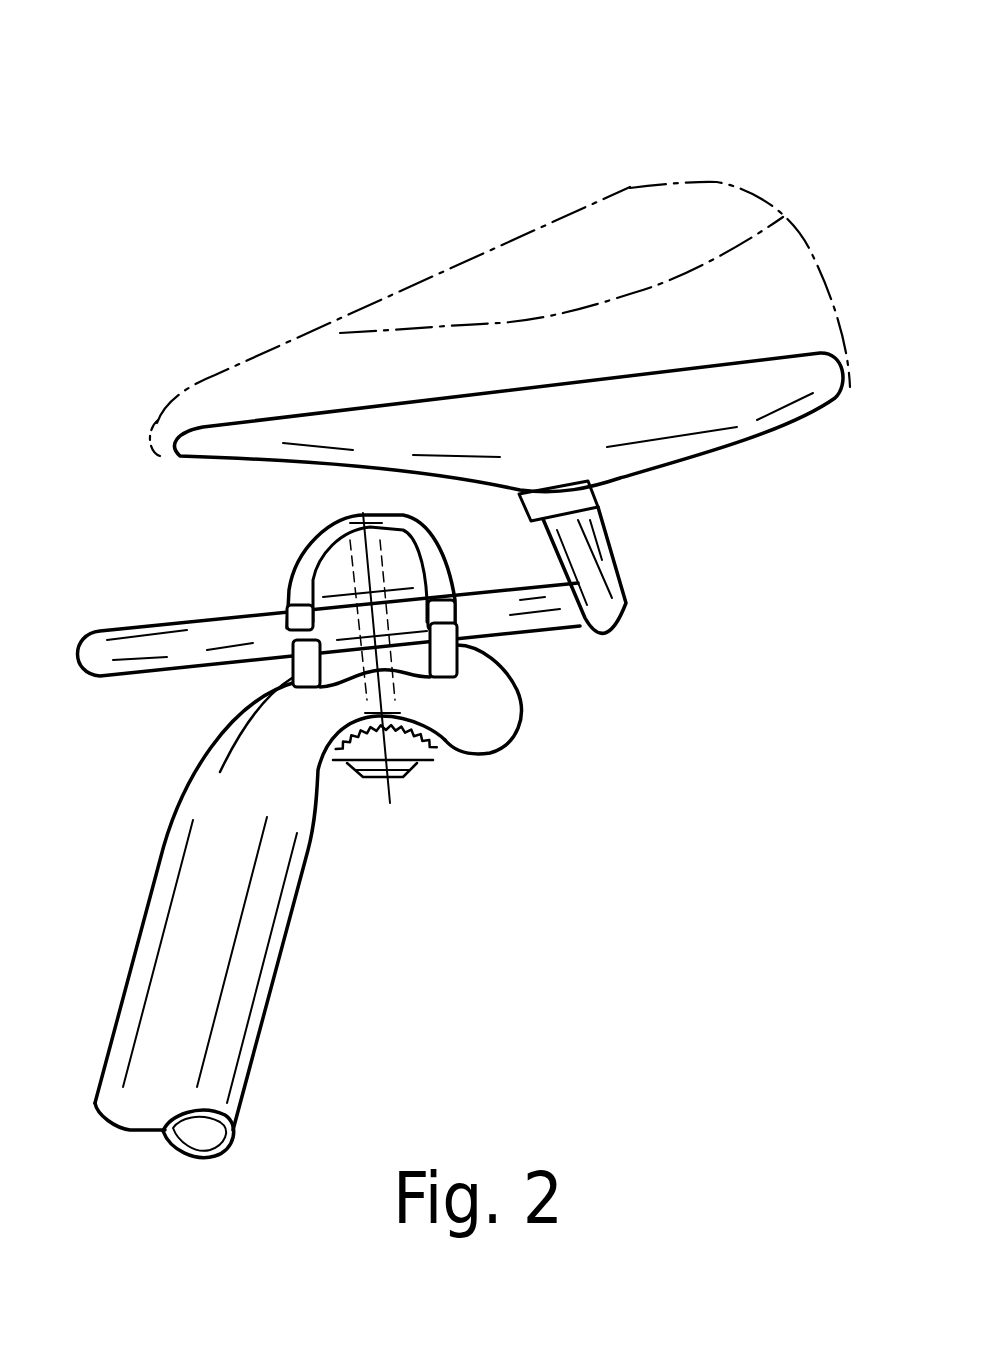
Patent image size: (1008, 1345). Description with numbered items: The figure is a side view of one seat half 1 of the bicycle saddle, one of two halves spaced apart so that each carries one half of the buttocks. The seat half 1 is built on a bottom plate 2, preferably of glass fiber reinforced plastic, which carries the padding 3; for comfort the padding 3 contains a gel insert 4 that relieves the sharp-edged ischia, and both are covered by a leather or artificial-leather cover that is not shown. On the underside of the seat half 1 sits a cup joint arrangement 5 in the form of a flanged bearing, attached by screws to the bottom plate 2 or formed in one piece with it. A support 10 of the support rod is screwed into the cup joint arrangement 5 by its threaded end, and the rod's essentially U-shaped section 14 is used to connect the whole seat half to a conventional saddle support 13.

The seat half 1 is at (306, 276).
The bottom plate 2 is at (634, 455).
The padding 3 is at (293, 377).
The gel insert 4 is at (658, 223).
The cup joint arrangement 5 is at (620, 520).
The support 10 is at (588, 570).
The saddle support 13 is at (233, 1003).
The U-shaped section 14 is at (193, 645).